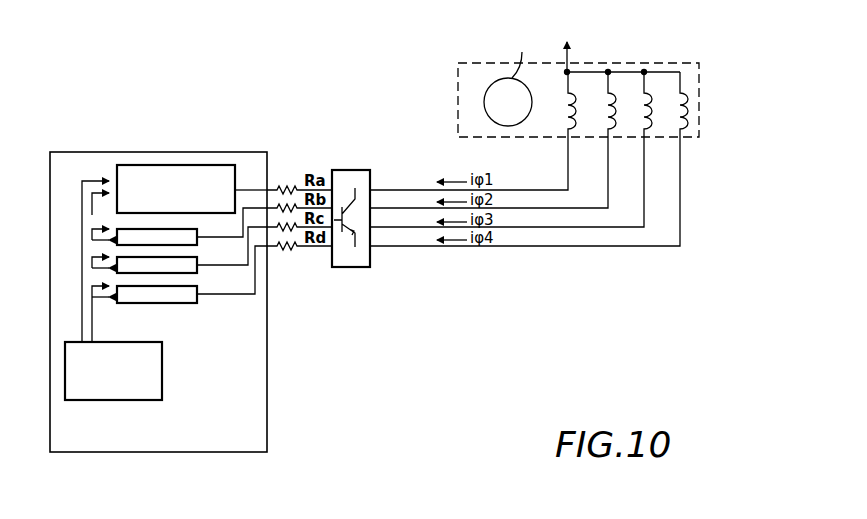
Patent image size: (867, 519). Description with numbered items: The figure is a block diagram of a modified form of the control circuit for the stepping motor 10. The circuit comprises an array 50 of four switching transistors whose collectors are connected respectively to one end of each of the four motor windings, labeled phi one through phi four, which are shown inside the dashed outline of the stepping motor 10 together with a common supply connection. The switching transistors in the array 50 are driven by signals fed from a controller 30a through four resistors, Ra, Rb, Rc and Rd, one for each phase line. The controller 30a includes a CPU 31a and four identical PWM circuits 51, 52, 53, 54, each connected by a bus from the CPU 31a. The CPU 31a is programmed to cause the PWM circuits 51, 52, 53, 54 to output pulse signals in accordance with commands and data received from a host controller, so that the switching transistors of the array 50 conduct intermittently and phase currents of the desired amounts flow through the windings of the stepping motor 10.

The stepping motor 10 is at (703, 120).
The controller 30a is at (235, 152).
The CPU 31a is at (162, 379).
The array of four switching transistors 50 is at (350, 268).
The PWM circuit 51 is at (117, 165).
The PWM circuit 52 is at (128, 224).
The PWM circuit 53 is at (128, 253).
The PWM circuit 54 is at (137, 305).